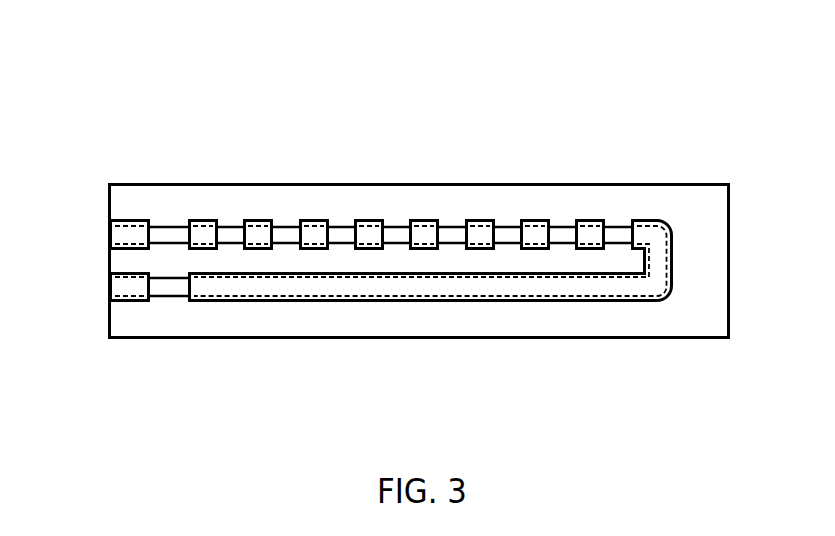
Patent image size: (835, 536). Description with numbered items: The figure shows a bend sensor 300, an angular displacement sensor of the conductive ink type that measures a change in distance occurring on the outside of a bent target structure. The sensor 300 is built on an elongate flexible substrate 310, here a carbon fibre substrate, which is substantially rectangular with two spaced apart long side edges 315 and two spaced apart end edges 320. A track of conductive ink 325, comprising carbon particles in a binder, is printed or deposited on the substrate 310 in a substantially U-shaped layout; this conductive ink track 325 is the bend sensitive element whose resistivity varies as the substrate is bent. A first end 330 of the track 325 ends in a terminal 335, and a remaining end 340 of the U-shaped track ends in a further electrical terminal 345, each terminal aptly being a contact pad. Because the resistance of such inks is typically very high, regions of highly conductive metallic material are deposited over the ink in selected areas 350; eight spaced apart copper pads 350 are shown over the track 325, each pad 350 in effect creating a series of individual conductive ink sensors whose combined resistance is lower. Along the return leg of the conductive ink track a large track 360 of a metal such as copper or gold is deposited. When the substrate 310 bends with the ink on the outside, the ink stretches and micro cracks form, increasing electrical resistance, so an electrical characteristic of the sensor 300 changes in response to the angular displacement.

The bend sensor 300 is at (602, 98).
The elongate flexible substrate 310 is at (685, 197).
The long side edges 315 is at (338, 183).
The end edges 320 is at (108, 200).
The track of conductive ink 325 is at (395, 233).
The first end 330 is at (330, 190).
The terminal 335 is at (128, 233).
The remaining end 340 is at (349, 317).
The further electrical terminal 345 is at (128, 289).
The pads of highly conductive material 350 is at (202, 236).
The large track of metal 360 is at (432, 288).